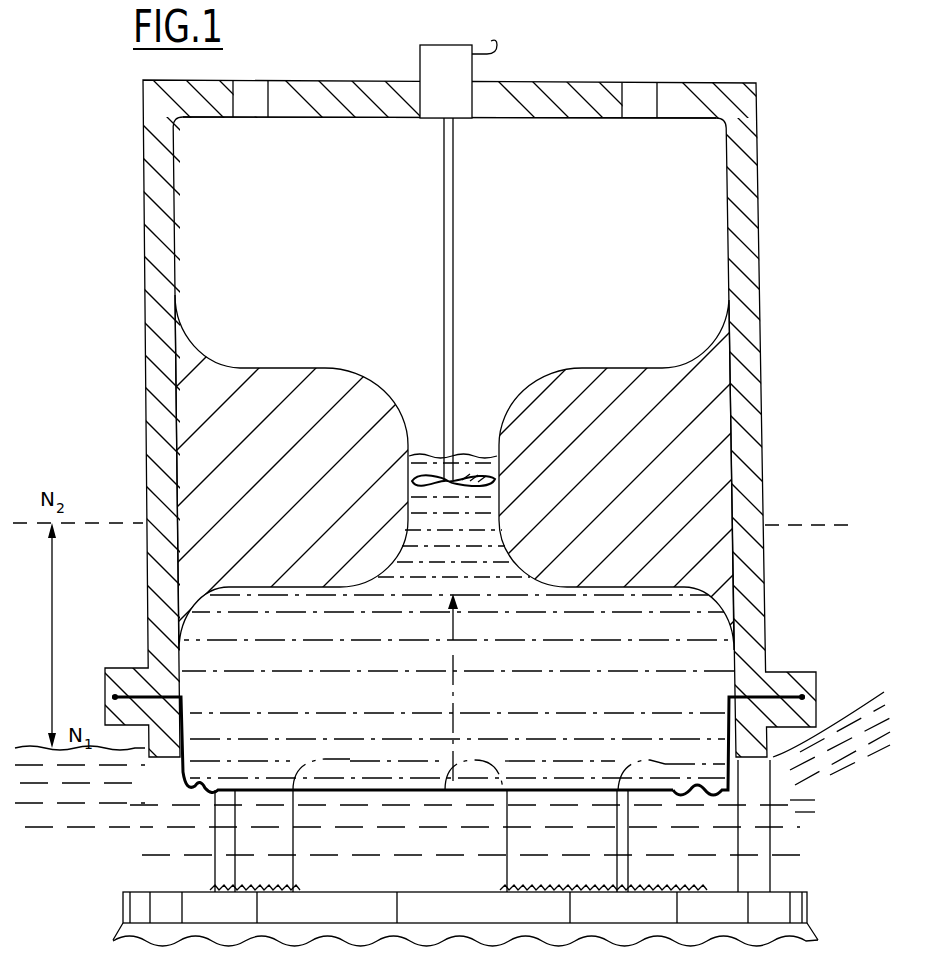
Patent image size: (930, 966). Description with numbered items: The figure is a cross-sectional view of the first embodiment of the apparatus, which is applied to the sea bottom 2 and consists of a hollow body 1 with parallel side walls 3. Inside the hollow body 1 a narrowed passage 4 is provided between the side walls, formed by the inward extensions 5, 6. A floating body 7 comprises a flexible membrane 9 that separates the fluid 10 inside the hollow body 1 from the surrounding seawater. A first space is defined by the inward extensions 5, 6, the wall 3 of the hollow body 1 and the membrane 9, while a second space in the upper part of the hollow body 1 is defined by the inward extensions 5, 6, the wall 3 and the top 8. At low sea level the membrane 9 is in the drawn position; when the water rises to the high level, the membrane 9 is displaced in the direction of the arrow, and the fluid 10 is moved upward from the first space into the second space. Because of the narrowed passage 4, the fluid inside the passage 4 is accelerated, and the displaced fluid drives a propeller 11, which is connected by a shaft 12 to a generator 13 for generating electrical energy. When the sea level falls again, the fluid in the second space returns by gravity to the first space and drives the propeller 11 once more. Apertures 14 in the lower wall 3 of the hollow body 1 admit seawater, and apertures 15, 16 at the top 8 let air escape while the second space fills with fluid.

The hollow body 1 is at (776, 91).
The sea bottom 2 is at (164, 906).
The side wall 3 is at (746, 412).
The narrowed passage 4 is at (407, 392).
The inward extension 5 is at (294, 388).
The inward extension 6 is at (627, 388).
The floating body 7 is at (166, 797).
The top 8 is at (548, 96).
The membrane 9 is at (672, 798).
The fluid 10 is at (650, 661).
The propeller 11 is at (479, 466).
The shaft 12 is at (444, 233).
The generator 13 is at (421, 68).
The apertures 14 is at (760, 842).
The aperture 15 is at (248, 96).
The aperture 16 is at (636, 101).